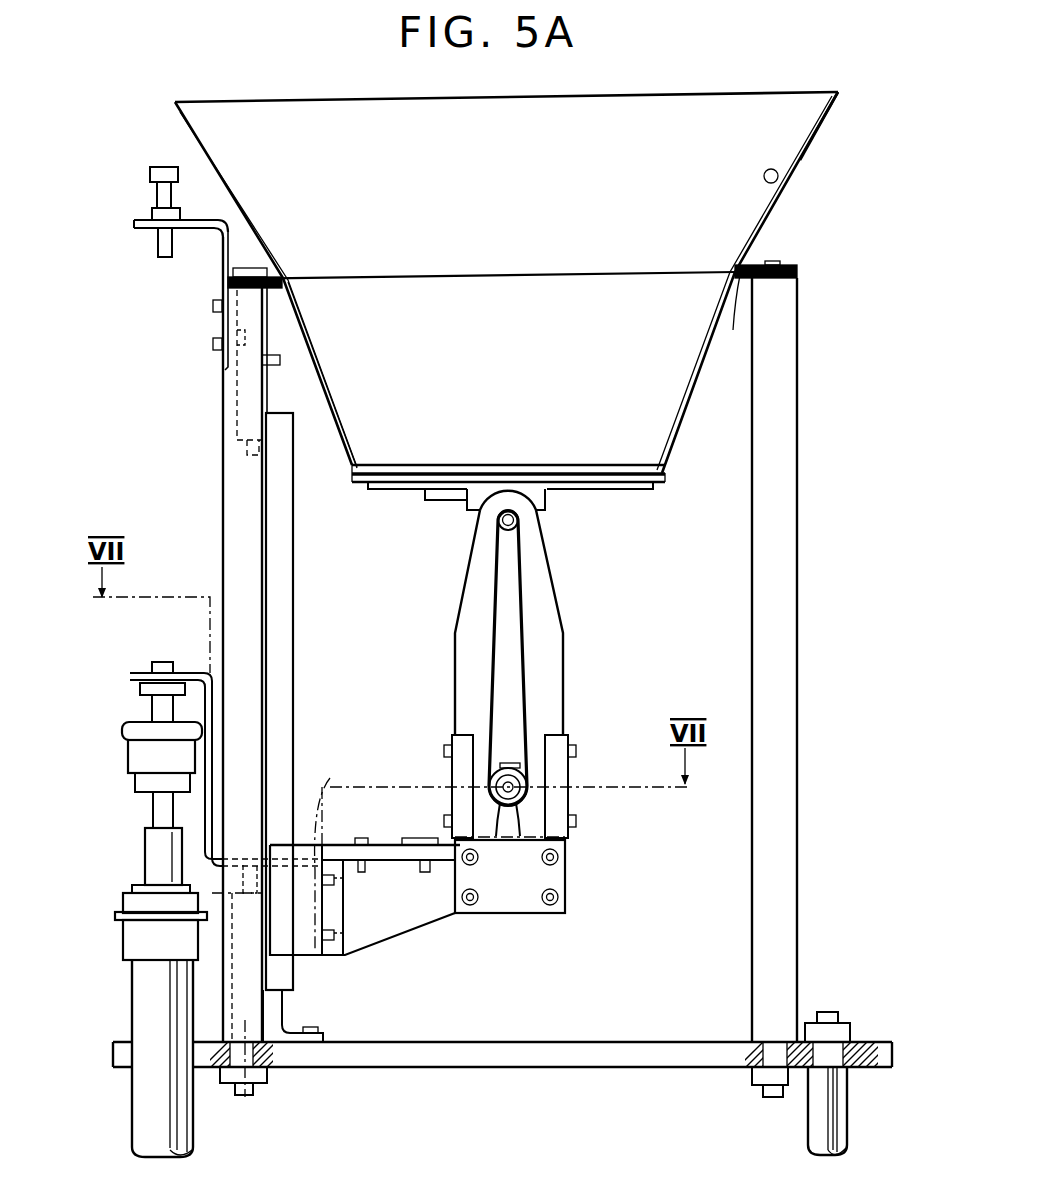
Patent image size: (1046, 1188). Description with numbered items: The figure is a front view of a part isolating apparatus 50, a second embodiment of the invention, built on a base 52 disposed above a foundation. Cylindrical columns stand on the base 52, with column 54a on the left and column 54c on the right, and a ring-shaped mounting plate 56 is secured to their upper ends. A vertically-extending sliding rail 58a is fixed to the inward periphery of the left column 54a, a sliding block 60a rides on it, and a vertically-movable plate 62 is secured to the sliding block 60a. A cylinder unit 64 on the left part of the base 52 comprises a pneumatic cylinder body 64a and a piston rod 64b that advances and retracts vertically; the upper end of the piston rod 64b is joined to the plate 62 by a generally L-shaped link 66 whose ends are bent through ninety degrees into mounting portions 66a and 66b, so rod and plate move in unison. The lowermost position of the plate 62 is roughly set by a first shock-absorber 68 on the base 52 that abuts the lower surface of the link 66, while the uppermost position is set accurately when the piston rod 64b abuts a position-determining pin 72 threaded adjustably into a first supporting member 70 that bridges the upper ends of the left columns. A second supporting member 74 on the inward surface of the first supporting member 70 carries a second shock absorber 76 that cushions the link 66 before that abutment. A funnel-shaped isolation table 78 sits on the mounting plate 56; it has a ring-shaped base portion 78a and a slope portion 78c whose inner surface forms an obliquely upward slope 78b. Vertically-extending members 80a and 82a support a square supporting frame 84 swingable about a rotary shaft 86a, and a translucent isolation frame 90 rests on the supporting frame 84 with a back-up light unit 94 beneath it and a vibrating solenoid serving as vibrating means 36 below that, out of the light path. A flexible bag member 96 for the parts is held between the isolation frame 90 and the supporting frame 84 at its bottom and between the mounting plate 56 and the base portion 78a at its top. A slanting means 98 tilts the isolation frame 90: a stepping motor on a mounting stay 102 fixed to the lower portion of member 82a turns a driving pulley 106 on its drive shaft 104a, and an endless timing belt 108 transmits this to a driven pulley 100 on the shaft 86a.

The vibrating means 36 is at (442, 500).
The part isolating apparatus 50 is at (830, 518).
The base 52 is at (548, 1068).
The column 54a is at (230, 566).
The column 54c is at (798, 657).
The mounting plate 56 is at (743, 278).
The sliding rail 58a is at (282, 634).
The sliding block 60a is at (305, 948).
The vertically-movable plate 62 is at (390, 845).
The cylinder unit 64 is at (142, 873).
The cylinder body 64a is at (147, 1030).
The piston rod 64b is at (158, 803).
The link 66 is at (208, 758).
The mounting portion 66a is at (143, 672).
The mounting portion 66b is at (330, 853).
The first shock-absorber 68 is at (256, 1076).
The first supporting member 70 is at (222, 250).
The position-determining pin 72 is at (160, 245).
The second supporting member 74 is at (280, 362).
The second shock absorber 76 is at (238, 405).
The isolation table 78 is at (690, 110).
The base portion 78a is at (757, 268).
The slope 78b is at (778, 173).
The slope portion 78c is at (818, 124).
The vertically-extending member 80a is at (564, 892).
The vertically-extending member 82a is at (550, 676).
The supporting frame 84 is at (666, 481).
The rotary shaft 86a is at (518, 522).
The isolation frame 90 is at (625, 465).
The back-up light unit 94 is at (650, 490).
The bag member 96 is at (693, 376).
The slanting means 98 is at (578, 776).
The driven pulley 100 is at (500, 535).
The mounting stay 102 is at (556, 798).
The drive shaft 104a is at (493, 782).
The driving pulley 106 is at (524, 808).
The endless timing belt 108 is at (527, 637).